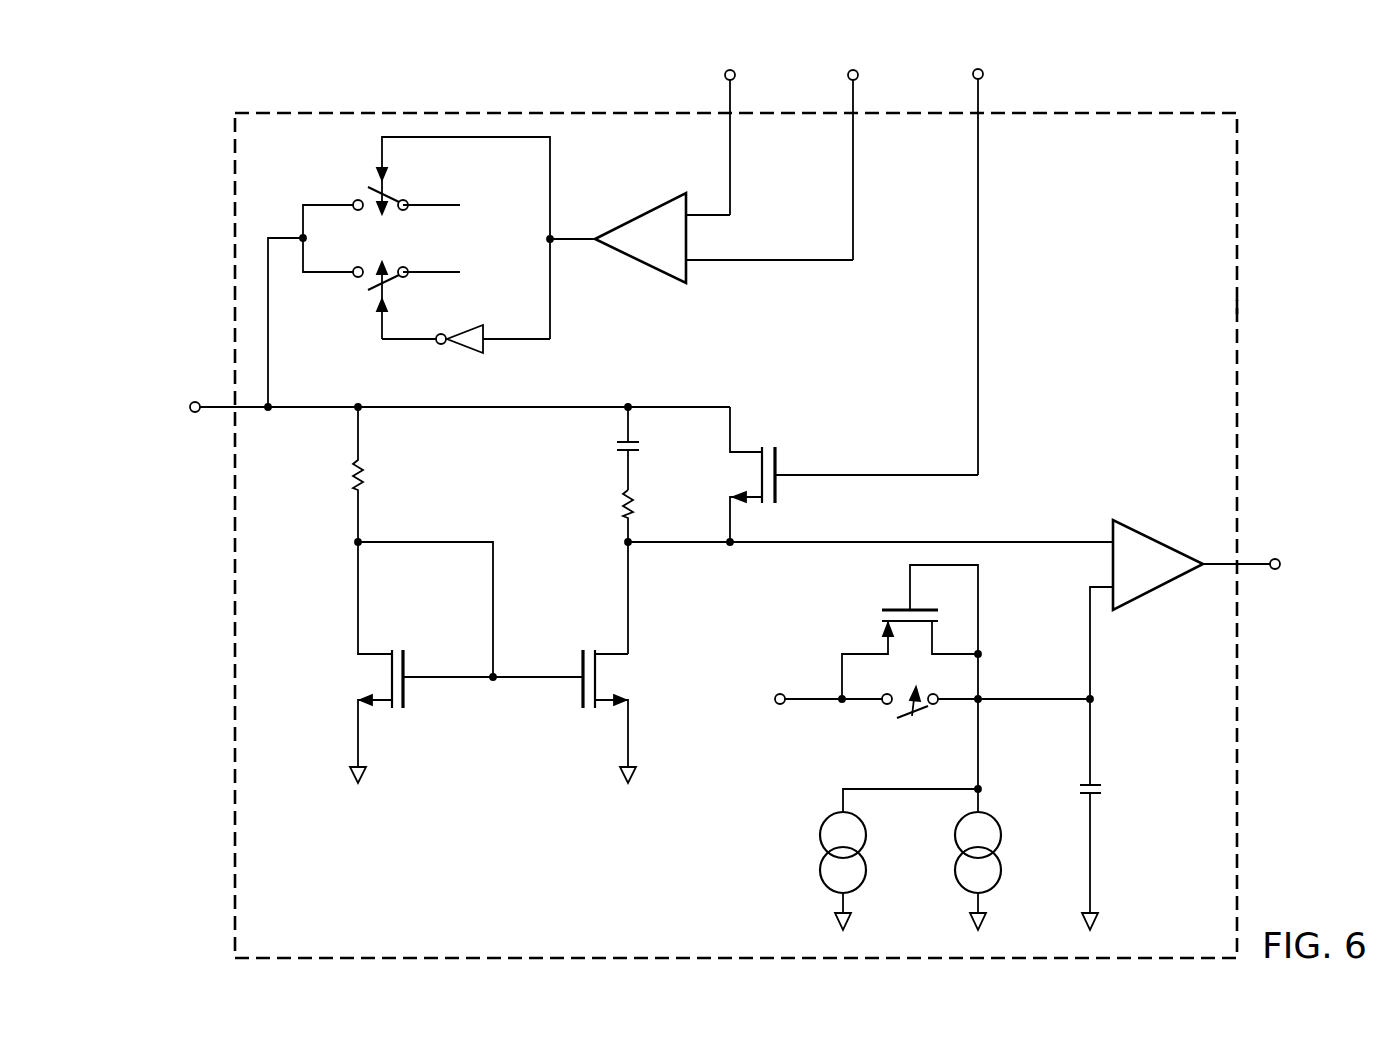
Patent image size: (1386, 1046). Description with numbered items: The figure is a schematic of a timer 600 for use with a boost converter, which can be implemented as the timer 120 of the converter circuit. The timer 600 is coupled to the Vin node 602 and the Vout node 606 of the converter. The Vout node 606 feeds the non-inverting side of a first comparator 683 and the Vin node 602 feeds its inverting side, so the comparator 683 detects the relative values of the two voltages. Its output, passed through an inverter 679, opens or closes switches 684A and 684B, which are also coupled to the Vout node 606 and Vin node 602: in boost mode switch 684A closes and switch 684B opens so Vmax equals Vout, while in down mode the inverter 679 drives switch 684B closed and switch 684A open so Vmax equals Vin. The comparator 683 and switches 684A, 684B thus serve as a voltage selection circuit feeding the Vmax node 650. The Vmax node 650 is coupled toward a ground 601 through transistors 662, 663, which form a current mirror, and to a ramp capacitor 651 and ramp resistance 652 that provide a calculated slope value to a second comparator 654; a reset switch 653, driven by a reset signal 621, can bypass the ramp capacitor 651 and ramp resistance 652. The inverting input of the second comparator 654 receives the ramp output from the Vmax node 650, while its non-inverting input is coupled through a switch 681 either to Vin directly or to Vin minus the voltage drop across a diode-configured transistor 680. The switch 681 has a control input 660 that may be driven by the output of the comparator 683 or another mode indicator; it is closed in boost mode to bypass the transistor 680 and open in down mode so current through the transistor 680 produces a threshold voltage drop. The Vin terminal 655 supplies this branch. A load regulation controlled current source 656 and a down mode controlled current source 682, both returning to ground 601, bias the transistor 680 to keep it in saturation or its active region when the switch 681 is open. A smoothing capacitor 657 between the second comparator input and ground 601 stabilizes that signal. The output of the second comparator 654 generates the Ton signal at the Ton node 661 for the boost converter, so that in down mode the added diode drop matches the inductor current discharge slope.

The timer 600 is at (118, 133).
The timer 120 is at (1245, 307).
The Vout node 606 is at (725, 78).
The Vin node 602 is at (859, 79).
The reset signal 621 is at (984, 78).
The first comparator 683 is at (640, 212).
The switch 684A is at (377, 180).
The switch 684B is at (377, 290).
The inverter 679 is at (445, 350).
The Vmax node 650 is at (193, 414).
The ramp capacitor 651 is at (618, 446).
The ramp resistance 652 is at (620, 500).
The reset switch 653 is at (778, 490).
The second comparator 654 is at (1180, 526).
The Ton node 661 is at (1277, 571).
The transistor 663 is at (405, 690).
The transistor 662 is at (583, 690).
The transistor 680 is at (882, 600).
The Vin terminal 655 is at (780, 705).
The switch 681 is at (897, 718).
The input 660 is at (917, 718).
The down mode controlled current source 682 is at (955, 835).
The load regulation controlled current source 656 is at (866, 868).
The smoothing capacitor 657 is at (1103, 790).
The ground 601 is at (352, 776).